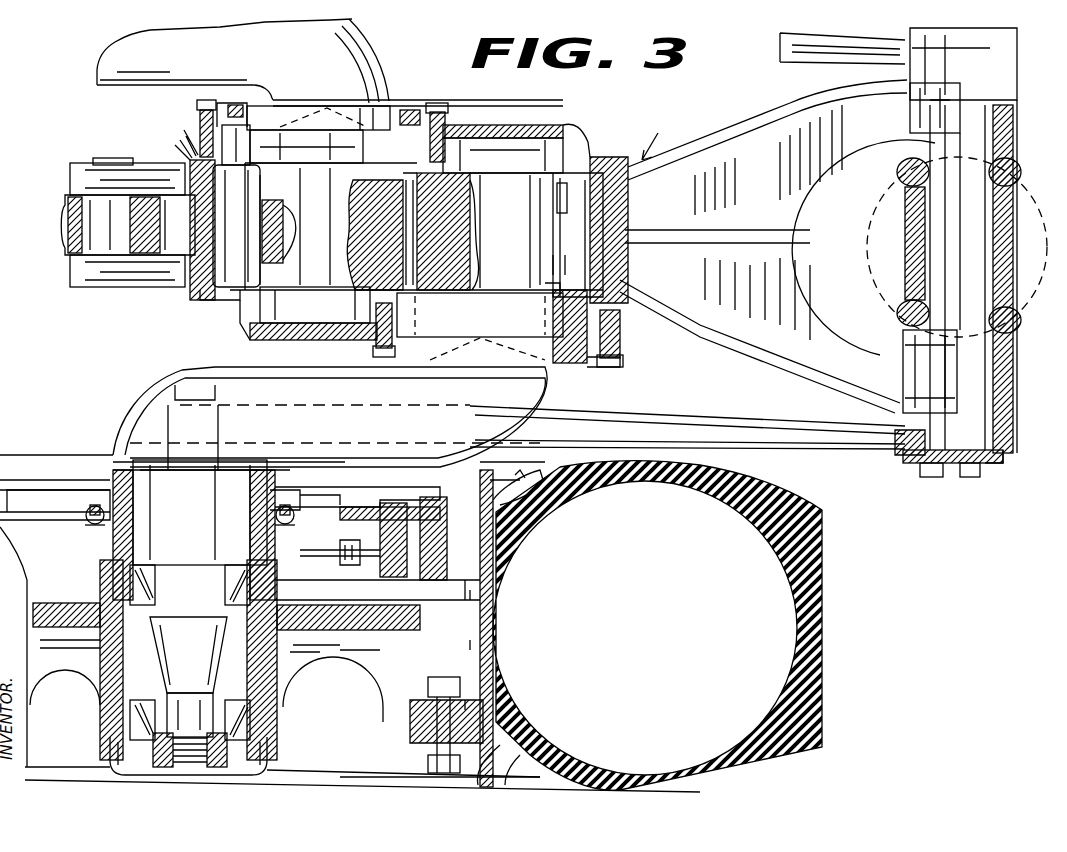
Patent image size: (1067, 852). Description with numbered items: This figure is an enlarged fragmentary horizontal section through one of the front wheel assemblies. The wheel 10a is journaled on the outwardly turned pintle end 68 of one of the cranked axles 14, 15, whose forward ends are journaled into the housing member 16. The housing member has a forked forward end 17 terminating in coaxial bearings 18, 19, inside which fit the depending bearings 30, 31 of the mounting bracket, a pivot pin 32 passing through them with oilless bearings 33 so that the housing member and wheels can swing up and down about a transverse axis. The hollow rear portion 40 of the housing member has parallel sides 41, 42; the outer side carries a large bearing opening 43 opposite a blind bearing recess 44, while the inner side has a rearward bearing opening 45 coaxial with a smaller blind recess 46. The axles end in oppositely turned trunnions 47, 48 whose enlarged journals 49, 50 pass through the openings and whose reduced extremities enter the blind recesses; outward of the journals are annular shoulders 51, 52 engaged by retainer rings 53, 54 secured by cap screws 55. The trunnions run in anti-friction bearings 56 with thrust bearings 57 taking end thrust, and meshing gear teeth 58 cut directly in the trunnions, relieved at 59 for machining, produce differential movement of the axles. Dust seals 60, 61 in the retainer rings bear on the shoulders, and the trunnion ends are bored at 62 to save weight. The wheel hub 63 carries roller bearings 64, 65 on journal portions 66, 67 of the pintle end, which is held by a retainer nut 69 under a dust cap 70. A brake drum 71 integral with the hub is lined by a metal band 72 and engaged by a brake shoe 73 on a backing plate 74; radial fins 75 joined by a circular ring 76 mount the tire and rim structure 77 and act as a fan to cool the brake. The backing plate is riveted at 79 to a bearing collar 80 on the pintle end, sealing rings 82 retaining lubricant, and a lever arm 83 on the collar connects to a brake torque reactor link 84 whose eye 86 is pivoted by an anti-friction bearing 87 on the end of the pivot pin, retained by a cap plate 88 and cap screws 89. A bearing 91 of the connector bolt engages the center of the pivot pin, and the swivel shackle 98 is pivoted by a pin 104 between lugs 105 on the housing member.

The wheel 10a is at (825, 665).
The cranked axle 14 is at (185, 388).
The cranked axle 15 is at (100, 69).
The housing member 16 is at (641, 137).
The forked forward end 17 is at (777, 246).
The bearing 18 is at (915, 374).
The bearing 19 is at (925, 113).
The depending bearing 30 is at (900, 313).
The depending bearing 31 is at (900, 172).
The pivot pin 32 is at (957, 277).
The bearings 33 is at (1010, 152).
The hollow rear portion 40 is at (578, 235).
The outer side 41 is at (212, 300).
The inner side 42 is at (610, 152).
The bearing opening 43 is at (625, 318).
The blind bearing recess 44 is at (563, 133).
The bearing opening 45 is at (185, 215).
The blind bearing recess 46 is at (250, 305).
The trunnion 47 is at (511, 231).
The trunnion 48 is at (416, 226).
The journal 49 is at (545, 283).
The journal 50 is at (252, 162).
The shoulder 51 is at (565, 362).
The shoulder 52 is at (243, 112).
The retainer ring 53 is at (625, 356).
The retainer ring 54 is at (418, 118).
The cap screws 55 is at (438, 107).
The anti-friction bearings 56 is at (280, 305).
The thrust bearings 57 is at (262, 130).
The gear teeth 58 is at (410, 218).
The relief 59 is at (333, 168).
The dust seal 60 is at (594, 364).
The dust seal 61 is at (403, 108).
The bore 62 is at (262, 232).
The hub 63 is at (290, 662).
The roller bearing 64 is at (250, 713).
The roller bearing 65 is at (212, 576).
The journal portion 66 is at (191, 705).
The journal portion 67 is at (190, 613).
The pintle end 68 is at (137, 527).
The retainer nut 69 is at (220, 750).
The dust cap 70 is at (110, 746).
The brake drum 71 is at (505, 480).
The band 72 is at (456, 595).
The brake shoe 73 is at (393, 578).
The backing plate 74 is at (352, 507).
The fins 75 is at (364, 660).
The circular ring 76 is at (385, 748).
The tire mounting and rim structure 77 is at (543, 738).
The rivets 79 is at (330, 493).
The bearing collar 80 is at (282, 498).
The sealing rings 82 is at (112, 457).
The lever arm 83 is at (168, 440).
The brake torque reactor link 84 is at (732, 418).
The eye 86 is at (1005, 58).
The anti-friction bearing 87 is at (1005, 455).
The cap plate 88 is at (990, 465).
The cap screws 89 is at (970, 478).
The bearing 91 is at (915, 233).
The swivel shackle 98 is at (65, 243).
The pin 104 is at (113, 160).
The lugs 105 is at (70, 182).